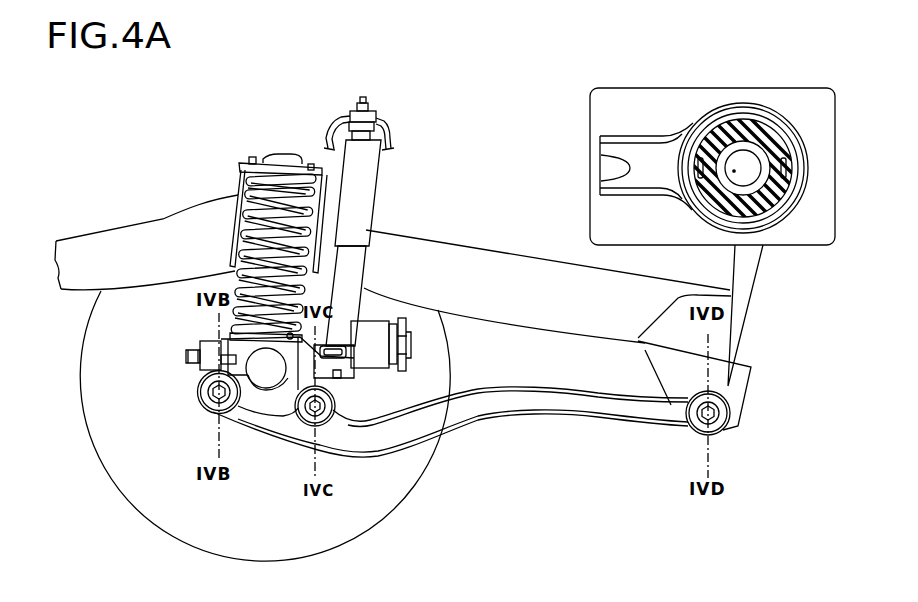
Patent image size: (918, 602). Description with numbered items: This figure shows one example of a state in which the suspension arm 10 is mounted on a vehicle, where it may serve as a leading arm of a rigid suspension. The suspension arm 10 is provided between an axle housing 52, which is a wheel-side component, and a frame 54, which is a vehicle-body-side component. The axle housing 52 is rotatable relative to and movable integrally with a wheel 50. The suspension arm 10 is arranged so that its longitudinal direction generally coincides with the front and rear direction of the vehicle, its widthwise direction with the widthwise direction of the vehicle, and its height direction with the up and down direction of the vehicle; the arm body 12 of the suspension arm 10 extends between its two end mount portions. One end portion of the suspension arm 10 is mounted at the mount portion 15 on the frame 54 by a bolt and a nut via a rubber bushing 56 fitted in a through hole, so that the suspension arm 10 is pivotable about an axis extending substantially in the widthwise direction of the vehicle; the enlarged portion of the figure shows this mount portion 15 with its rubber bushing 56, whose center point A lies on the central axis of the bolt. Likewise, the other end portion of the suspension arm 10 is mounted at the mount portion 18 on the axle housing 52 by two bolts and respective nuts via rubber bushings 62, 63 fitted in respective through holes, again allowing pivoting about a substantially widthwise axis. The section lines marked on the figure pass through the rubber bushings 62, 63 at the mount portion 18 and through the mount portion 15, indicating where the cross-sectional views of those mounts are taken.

The suspension arm 10 is at (569, 437).
The trailing arm 12 is at (457, 420).
The mount portion 15 is at (812, 229).
The mount portion 18 is at (278, 432).
The wheel 50 is at (220, 208).
The axle housing 52 is at (268, 388).
The frame 54 is at (752, 413).
The rubber bushing 56 is at (758, 142).
The rubber bushing 62 is at (203, 410).
The rubber bushing 63 is at (323, 418).